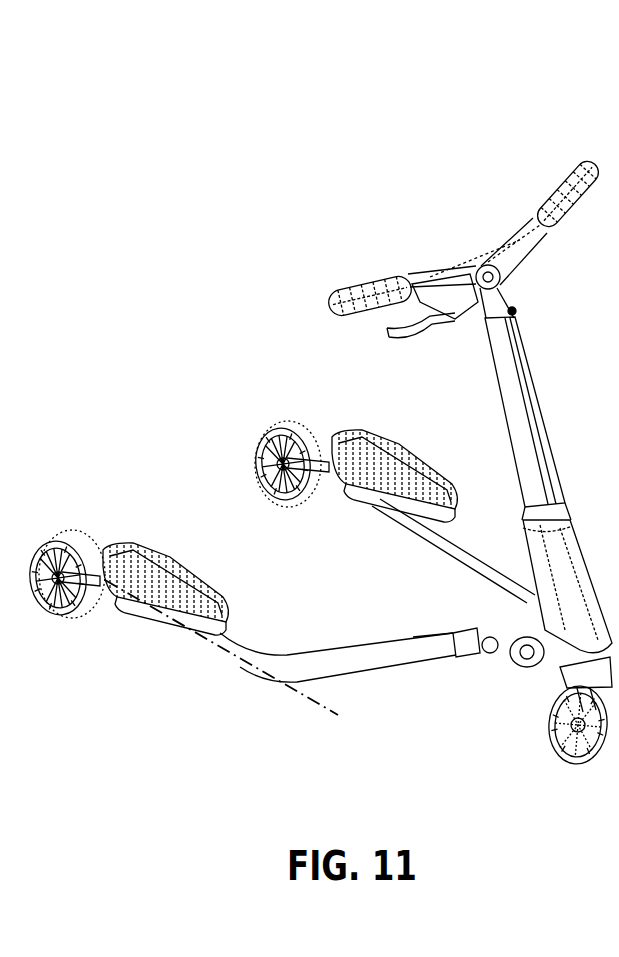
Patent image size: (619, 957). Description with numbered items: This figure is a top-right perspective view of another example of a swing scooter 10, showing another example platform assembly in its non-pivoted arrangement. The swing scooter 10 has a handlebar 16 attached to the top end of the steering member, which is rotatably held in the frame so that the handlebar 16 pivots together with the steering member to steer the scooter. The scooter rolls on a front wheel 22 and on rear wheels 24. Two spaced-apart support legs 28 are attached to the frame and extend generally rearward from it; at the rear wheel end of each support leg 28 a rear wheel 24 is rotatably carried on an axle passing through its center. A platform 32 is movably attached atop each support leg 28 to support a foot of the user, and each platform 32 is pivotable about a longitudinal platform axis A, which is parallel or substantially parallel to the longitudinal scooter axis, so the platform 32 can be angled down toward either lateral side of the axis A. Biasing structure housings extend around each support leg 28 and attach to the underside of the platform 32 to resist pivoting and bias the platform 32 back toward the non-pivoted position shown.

The swing scooter 10 is at (272, 192).
The handlebar 16 is at (567, 185).
The front wheel 22 is at (605, 752).
The rear wheel 24 is at (61, 540).
The support leg 28 is at (453, 532).
The platform 32 is at (152, 548).
The longitudinal platform axis A is at (330, 712).